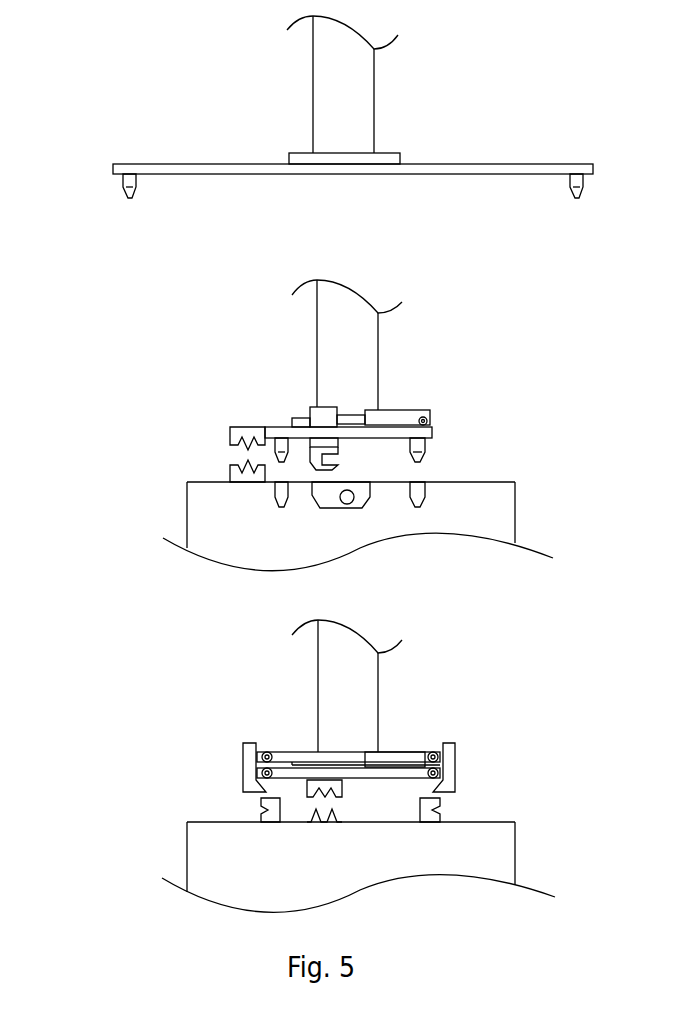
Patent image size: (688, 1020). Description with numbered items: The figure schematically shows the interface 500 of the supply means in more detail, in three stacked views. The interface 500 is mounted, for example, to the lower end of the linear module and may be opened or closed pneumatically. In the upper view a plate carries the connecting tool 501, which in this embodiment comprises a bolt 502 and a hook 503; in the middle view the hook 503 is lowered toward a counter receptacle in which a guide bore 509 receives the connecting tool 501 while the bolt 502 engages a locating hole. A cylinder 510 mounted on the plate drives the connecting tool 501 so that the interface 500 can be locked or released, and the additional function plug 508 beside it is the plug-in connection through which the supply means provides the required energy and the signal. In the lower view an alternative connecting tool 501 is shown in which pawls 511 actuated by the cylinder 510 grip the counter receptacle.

The interface 500 is at (237, 177).
The connecting tool 501 is at (570, 212).
The bolt 502 is at (365, 511).
The hook 503 is at (302, 448).
The additional function plug 508 is at (227, 449).
The guide bore 509 is at (265, 501).
The cylinder 510 is at (424, 414).
The pawl 511 is at (253, 795).